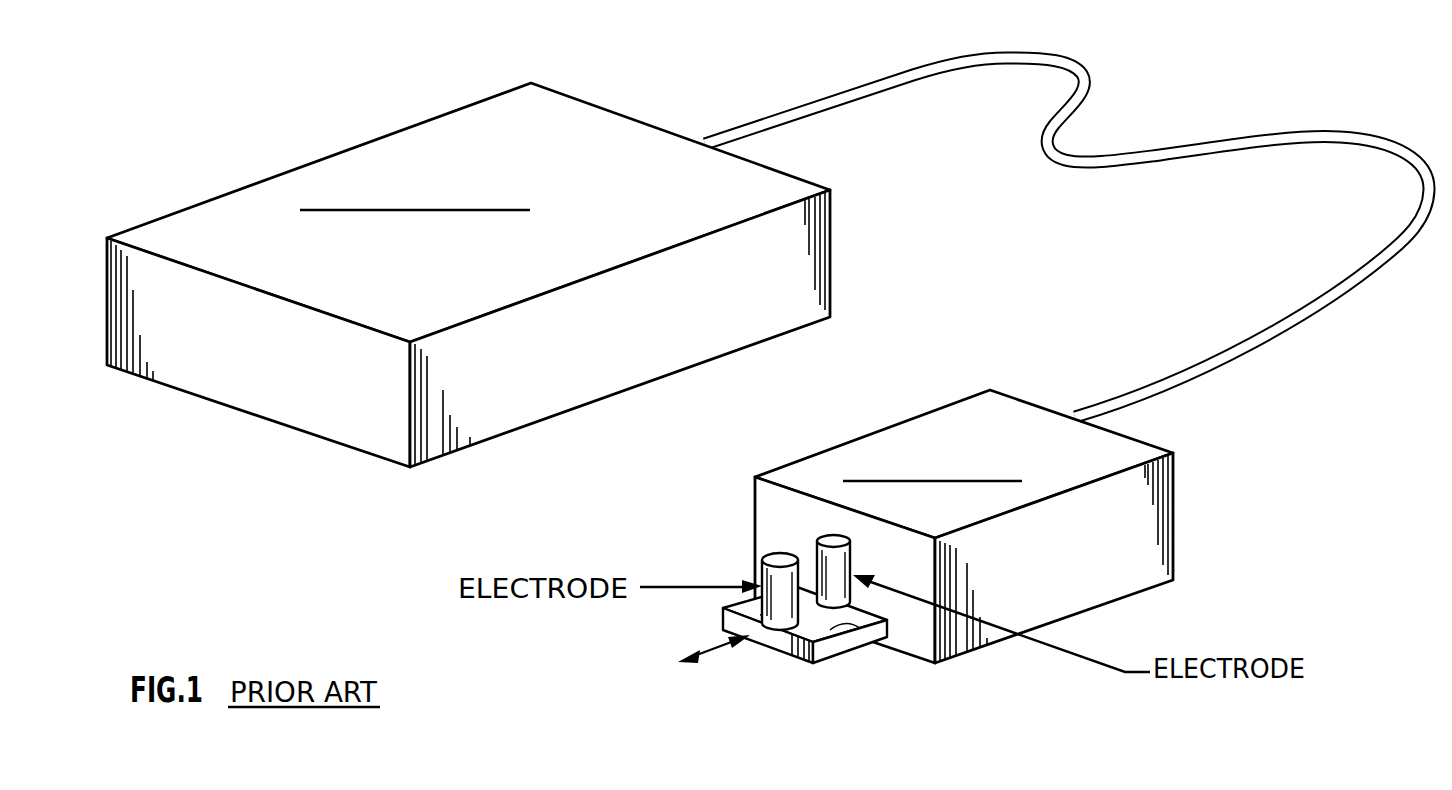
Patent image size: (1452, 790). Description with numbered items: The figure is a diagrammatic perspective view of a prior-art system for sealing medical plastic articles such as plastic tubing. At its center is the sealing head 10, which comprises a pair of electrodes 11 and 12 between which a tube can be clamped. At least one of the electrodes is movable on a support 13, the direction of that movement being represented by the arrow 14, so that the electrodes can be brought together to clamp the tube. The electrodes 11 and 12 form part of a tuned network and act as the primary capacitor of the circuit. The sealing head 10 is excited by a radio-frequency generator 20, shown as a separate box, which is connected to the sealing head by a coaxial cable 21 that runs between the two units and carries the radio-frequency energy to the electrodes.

The sealing head 10 is at (993, 405).
The electrode 11 is at (753, 560).
The electrode 12 is at (820, 547).
The support 13 is at (833, 627).
The arrow 14 is at (722, 650).
The radio-frequency generator 20 is at (262, 397).
The coaxial cable 21 is at (1390, 252).